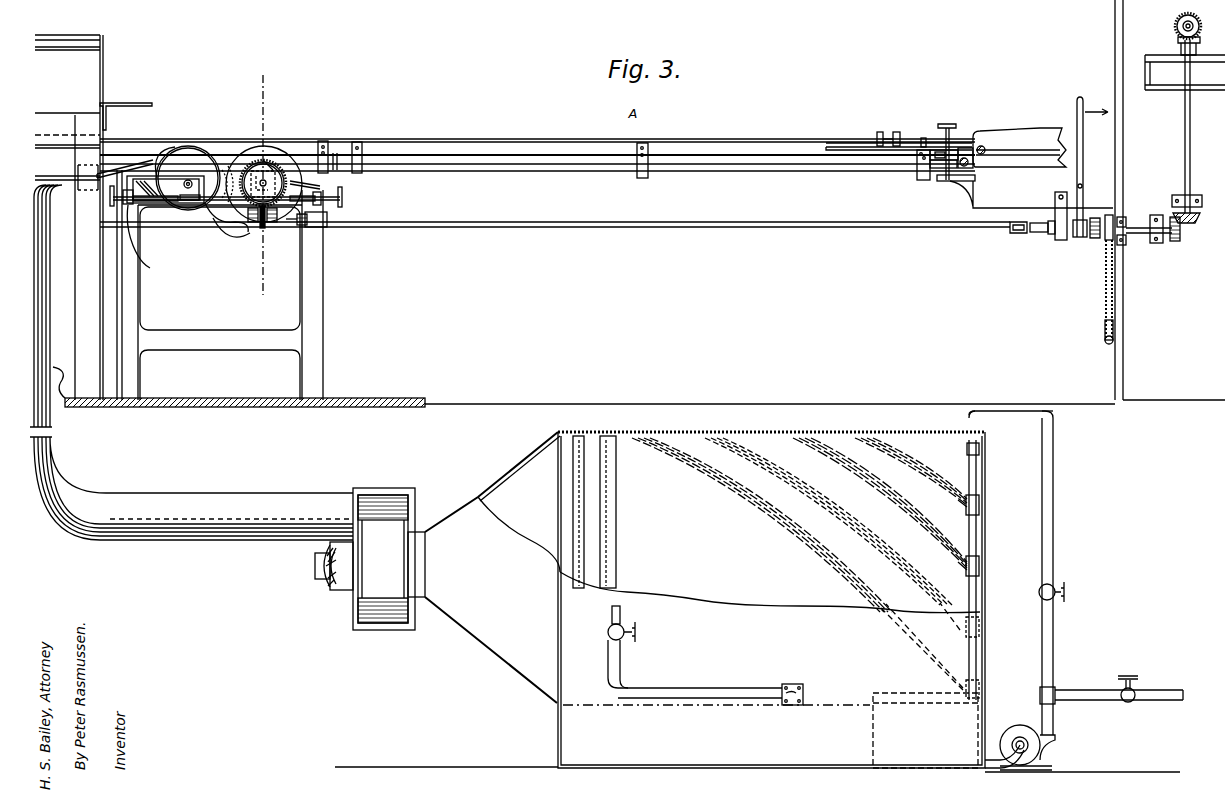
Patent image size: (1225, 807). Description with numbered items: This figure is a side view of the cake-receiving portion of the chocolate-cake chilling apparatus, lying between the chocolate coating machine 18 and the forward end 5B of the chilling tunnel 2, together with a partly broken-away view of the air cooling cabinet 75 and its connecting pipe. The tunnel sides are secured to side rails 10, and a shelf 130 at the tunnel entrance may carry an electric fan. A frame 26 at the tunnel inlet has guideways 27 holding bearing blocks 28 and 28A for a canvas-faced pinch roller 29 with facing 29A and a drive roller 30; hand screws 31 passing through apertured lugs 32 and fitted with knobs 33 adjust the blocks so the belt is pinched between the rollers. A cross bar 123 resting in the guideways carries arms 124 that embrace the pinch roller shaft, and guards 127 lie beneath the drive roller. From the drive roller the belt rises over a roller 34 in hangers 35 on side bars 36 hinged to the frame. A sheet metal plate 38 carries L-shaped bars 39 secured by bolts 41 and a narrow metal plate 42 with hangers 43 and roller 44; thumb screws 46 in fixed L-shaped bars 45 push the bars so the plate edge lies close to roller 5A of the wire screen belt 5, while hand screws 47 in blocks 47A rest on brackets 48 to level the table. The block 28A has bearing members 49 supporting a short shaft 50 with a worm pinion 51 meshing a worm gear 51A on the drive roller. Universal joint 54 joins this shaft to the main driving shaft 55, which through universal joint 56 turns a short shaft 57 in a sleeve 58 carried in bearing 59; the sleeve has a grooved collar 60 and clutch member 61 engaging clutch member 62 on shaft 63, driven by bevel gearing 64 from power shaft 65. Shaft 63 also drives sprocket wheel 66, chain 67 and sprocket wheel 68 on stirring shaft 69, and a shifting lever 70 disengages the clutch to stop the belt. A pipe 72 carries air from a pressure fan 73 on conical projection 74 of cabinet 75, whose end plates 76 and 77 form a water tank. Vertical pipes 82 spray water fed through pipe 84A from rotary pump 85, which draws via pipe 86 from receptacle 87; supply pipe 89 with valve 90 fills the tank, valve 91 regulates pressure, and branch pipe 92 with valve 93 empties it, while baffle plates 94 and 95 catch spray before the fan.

The chilling tunnel 2 is at (69, 217).
The wire screen endless belt 5 is at (1020, 140).
The roller 5A is at (984, 147).
The forward end of the chilling tunnel 5B is at (131, 35).
The side rails 10 is at (263, 183).
The chocolate coating machine 18 is at (1115, 43).
The frame or table 26 is at (324, 278).
The guideways 27 is at (108, 173).
The bearing block 28 is at (192, 177).
The bearing block 28A is at (246, 170).
The pinch roller 29 is at (187, 147).
The canvas facing 29A is at (175, 148).
The drive roller 30 is at (258, 160).
The hand screws 31 is at (163, 203).
The apertured lugs 32 is at (123, 200).
The knobs 33 is at (110, 194).
The roller 34 is at (352, 142).
The hangers 35 is at (322, 140).
The side bars 36 is at (458, 150).
The sheet metal plate 38 is at (846, 152).
The L-shaped bars 39 is at (918, 160).
The bolts 41 is at (923, 138).
The narrow metal plate 42 is at (962, 148).
The hangers 43 is at (940, 126).
The roller 44 is at (968, 164).
The L-shaped bars 45 is at (856, 143).
The thumb screws 46 is at (879, 132).
The hand screws 47 is at (934, 160).
The blocks 47A is at (935, 168).
The brackets 48 is at (950, 182).
The bearing members 49 is at (250, 222).
The short shaft 50 is at (320, 228).
The worm pinion 51 is at (260, 226).
The worm gear 51A is at (270, 162).
The universal joint 54 is at (330, 222).
The main driving shaft 55 is at (688, 227).
The universal joint 56 is at (1018, 233).
The short shaft 57 is at (1040, 232).
The sleeve 58 is at (1051, 234).
The bearing 59 is at (1055, 210).
The annularly-grooved collar 60 is at (1080, 237).
The clutch member 61 is at (1095, 218).
The clutch member 62 is at (1112, 215).
The shaft 63 is at (1156, 243).
The bevel gearing 64 is at (1182, 228).
The power driven shaft 65 is at (1190, 165).
The sprocket wheel 66 is at (1126, 212).
The chain 67 is at (1106, 294).
The sprocket wheel 68 is at (1105, 343).
The shaft 69 is at (1113, 324).
The shifting lever 70 is at (1083, 156).
The pipe 72 is at (58, 437).
The pressure fan 73 is at (382, 632).
The conical projection 74 is at (492, 567).
The air cooling cabinet 75 is at (757, 602).
The end plate 76 is at (975, 722).
The end plate 77 is at (562, 735).
The vertical pipes 82 is at (977, 540).
The pipe 84A is at (1053, 531).
The rotary pump 85 is at (1042, 736).
The pipe 86 is at (995, 768).
The small water receptacle 87 is at (873, 733).
The supply pipe 89 is at (694, 688).
The cut off valve 90 is at (608, 631).
The valve 91 is at (1039, 590).
The branch pipe 92 is at (1063, 689).
The valve 93 is at (1130, 702).
The baffle plates 94 is at (616, 518).
The baffle plates 95 is at (573, 519).
The cross bar 123 is at (152, 238).
The arms 124 is at (553, 171).
The guards 127 is at (212, 220).
The shelf 130 is at (135, 102).